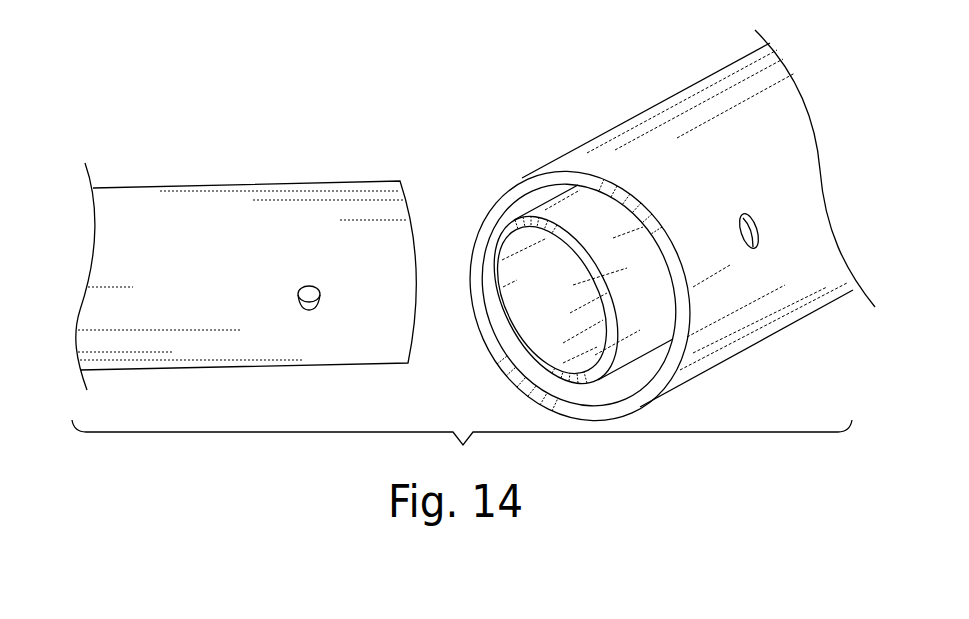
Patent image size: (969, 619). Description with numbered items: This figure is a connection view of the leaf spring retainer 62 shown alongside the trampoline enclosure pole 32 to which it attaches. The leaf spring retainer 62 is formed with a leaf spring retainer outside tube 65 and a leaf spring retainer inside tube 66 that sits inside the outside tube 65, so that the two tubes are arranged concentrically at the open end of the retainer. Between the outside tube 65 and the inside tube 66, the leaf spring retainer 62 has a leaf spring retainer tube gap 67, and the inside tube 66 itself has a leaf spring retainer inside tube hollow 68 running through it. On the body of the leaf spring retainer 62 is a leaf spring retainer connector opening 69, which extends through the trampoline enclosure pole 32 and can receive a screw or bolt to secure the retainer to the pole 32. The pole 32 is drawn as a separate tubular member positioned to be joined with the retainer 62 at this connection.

The trampoline enclosure pole 32 is at (307, 208).
The leaf spring retainer 62 is at (712, 110).
The leaf spring retainer outside tube 65 is at (538, 183).
The leaf spring retainer inside tube 66 is at (488, 278).
The leaf spring retainer tube gap 67 is at (618, 238).
The leaf spring retainer inside tube hollow 68 is at (600, 310).
The leaf spring retainer connector opening 69 is at (760, 230).